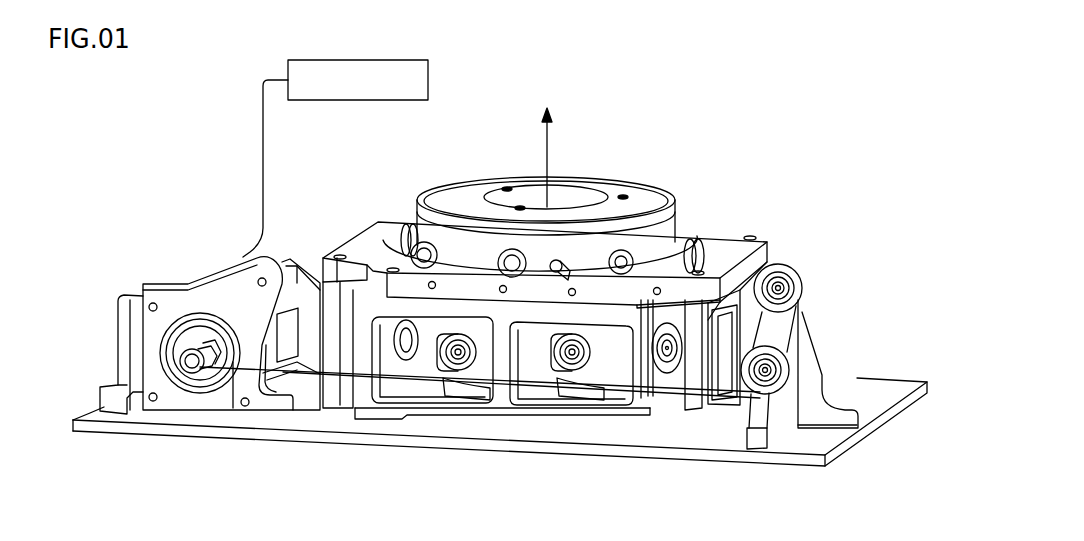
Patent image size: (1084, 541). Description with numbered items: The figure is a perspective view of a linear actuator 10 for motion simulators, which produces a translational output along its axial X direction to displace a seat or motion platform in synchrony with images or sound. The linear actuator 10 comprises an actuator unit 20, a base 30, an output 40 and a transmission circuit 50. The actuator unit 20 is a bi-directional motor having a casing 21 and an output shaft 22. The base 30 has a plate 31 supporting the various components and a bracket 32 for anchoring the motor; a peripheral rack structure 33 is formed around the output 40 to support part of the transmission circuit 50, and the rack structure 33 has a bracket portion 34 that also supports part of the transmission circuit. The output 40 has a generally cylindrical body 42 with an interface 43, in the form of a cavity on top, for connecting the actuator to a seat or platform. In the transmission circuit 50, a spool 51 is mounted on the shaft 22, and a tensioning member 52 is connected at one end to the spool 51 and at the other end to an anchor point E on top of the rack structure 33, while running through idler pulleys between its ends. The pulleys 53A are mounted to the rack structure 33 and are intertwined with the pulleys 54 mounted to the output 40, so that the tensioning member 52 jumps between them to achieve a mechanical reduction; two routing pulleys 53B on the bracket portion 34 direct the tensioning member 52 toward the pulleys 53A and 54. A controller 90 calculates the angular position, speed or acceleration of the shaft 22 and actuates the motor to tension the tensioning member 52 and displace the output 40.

The linear actuator 10 is at (250, 186).
The actuator unit 20 is at (200, 262).
The casing 21 is at (285, 258).
The output shaft 22 is at (212, 362).
The base 30 is at (836, 357).
The plate 31 is at (372, 440).
The bracket 32 is at (140, 313).
The peripheral rack structure 33 is at (382, 224).
The bracket portion 34 is at (812, 382).
The output 40 is at (686, 192).
The body 42 is at (668, 233).
The interface 43 is at (588, 194).
The transmission circuit 50 is at (794, 257).
The spool 51 is at (190, 368).
The tensioning member 52 is at (667, 374).
The pulleys 53A is at (510, 259).
The routing pulleys 53B is at (793, 288).
The pulleys 54 is at (466, 370).
The controller 90 is at (430, 82).
The anchor point E is at (557, 273).